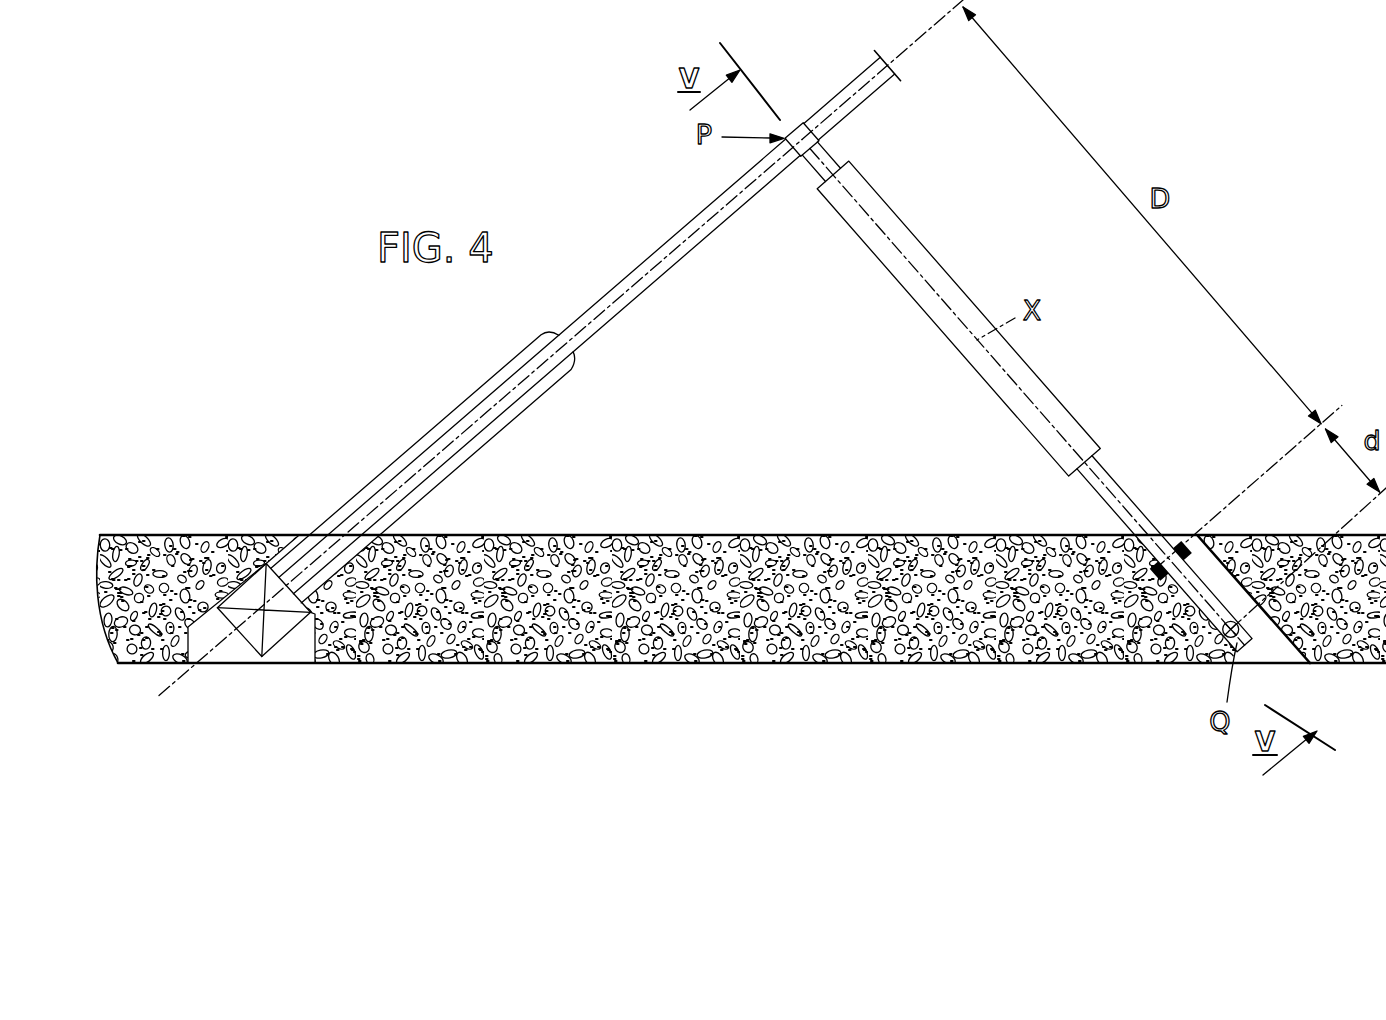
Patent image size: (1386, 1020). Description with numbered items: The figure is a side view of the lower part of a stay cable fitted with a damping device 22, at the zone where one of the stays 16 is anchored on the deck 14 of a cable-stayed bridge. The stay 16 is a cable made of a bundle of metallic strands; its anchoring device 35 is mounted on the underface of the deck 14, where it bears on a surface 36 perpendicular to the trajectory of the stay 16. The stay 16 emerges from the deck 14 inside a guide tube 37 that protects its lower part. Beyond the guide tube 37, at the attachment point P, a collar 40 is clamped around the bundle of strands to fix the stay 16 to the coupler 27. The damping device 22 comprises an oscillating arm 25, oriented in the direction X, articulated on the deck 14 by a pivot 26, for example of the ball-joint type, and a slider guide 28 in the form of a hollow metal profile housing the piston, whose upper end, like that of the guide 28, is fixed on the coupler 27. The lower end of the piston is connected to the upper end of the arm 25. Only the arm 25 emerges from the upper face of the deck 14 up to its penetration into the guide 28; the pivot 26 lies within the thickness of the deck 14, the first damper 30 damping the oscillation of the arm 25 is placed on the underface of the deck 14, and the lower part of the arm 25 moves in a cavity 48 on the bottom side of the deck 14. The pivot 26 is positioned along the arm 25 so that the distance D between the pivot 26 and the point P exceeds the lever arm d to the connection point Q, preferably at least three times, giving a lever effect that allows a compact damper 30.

The deck 14 is at (776, 650).
The stay 16 is at (684, 227).
The damping device 22 is at (932, 373).
The arm 25 is at (1130, 483).
The pivot 26 is at (1150, 569).
The coupler 27 is at (833, 159).
The slider guide 28 is at (924, 250).
The first damper 30 is at (1221, 635).
The anchoring device 35 is at (242, 622).
The surface 36 is at (310, 618).
The guide tube 37 is at (392, 465).
The collar 40 is at (803, 122).
The cavity 48 is at (1274, 652).